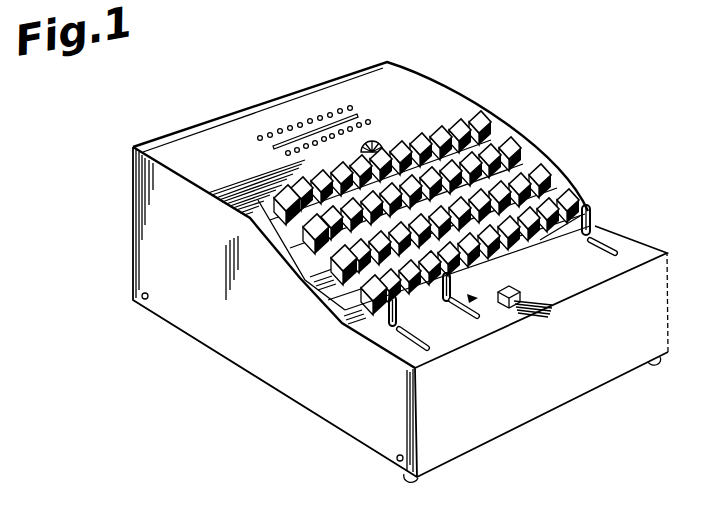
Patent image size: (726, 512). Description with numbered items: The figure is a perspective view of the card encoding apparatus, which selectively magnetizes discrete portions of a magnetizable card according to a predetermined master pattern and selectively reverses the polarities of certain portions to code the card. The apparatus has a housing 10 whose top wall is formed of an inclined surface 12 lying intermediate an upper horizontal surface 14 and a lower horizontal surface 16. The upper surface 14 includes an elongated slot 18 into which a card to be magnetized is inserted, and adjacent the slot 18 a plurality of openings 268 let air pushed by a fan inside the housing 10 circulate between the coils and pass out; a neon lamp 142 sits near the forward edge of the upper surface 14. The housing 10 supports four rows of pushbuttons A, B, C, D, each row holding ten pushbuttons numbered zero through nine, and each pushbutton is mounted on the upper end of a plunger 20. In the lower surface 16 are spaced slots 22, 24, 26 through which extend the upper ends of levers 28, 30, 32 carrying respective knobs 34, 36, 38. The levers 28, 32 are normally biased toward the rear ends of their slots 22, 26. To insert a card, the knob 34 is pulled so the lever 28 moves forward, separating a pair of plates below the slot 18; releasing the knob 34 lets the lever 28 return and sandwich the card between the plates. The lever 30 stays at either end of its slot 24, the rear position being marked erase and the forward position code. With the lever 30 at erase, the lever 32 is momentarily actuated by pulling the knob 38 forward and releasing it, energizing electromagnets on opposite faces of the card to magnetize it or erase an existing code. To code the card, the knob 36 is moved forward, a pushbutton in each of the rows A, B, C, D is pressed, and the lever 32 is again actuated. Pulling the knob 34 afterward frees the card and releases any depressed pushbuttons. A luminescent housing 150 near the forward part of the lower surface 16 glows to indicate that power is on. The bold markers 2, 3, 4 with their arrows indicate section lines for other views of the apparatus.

The housing 10 is at (445, 82).
The inclined surface 12 is at (228, 222).
The upper horizontal surface 14 is at (205, 124).
The lower horizontal surface 16 is at (590, 288).
The elongated slot 18 is at (270, 149).
The plunger 20 is at (342, 320).
The slot 22 is at (440, 349).
The slot 24 is at (438, 325).
The slot 26 is at (598, 250).
The lever 28 is at (406, 314).
The lever 30 is at (446, 301).
The lever 32 is at (617, 230).
The knob 34 is at (363, 317).
The knob 36 is at (463, 278).
The knob 38 is at (593, 212).
The neon lamp 142 is at (380, 133).
The luminescent housing 150 is at (520, 294).
The openings 268 is at (350, 112).
The row of pushbuttons A is at (503, 110).
The row of pushbuttons B is at (524, 140).
The row of pushbuttons C is at (550, 170).
The row of pushbuttons D is at (580, 188).
The section line 2- 2 is at (126, 240).
The section line 3- 3 is at (576, 239).
The section line 4- 4 is at (610, 187).